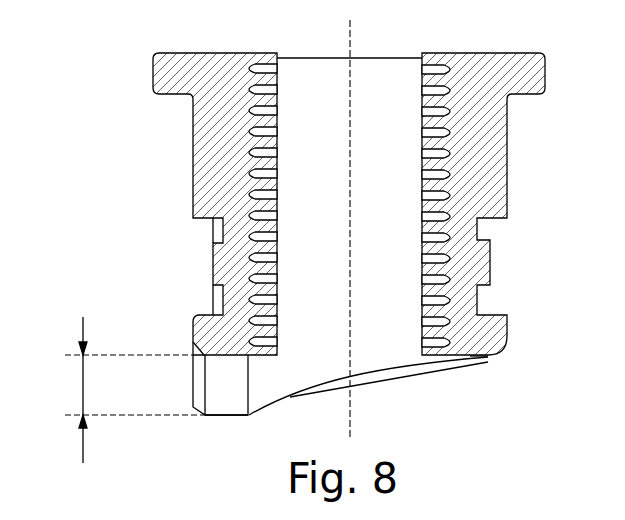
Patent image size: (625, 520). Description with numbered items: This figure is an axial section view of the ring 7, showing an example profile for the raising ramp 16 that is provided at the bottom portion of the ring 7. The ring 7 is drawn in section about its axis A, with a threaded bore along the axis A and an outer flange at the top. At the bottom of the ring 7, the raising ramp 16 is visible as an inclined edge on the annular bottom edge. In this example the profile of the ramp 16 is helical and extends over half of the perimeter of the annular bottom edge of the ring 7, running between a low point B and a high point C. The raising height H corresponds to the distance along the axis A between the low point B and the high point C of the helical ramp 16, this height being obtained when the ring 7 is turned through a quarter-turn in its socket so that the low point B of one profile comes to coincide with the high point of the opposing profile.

The ring 7 is at (490, 165).
The raising ramp 16 is at (390, 380).
The axis A is at (343, 225).
The low point B is at (248, 417).
The high point C is at (480, 358).
The raising height H is at (83, 463).